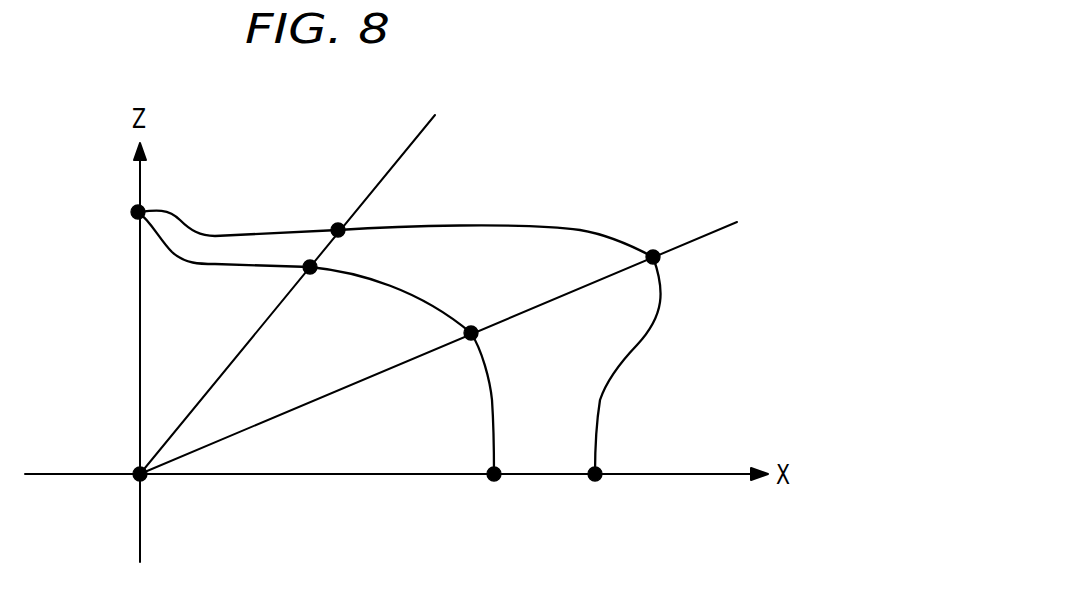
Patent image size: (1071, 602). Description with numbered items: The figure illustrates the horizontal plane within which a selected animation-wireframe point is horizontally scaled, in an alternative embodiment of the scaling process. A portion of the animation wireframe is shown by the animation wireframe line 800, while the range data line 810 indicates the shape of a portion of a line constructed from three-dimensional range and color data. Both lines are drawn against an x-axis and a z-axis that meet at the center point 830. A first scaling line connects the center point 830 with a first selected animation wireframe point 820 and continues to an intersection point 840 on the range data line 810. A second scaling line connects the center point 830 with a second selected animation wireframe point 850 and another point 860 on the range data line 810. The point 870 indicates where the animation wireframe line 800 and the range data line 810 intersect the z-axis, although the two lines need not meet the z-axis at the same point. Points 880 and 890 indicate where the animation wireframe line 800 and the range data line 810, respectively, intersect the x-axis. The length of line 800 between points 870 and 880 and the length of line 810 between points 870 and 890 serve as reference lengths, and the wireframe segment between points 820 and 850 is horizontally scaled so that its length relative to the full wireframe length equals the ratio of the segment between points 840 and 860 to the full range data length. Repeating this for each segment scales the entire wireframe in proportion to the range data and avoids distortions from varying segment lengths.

The animation wireframe line 800 is at (490, 395).
The 3D range data line 810 is at (637, 345).
The first selected animation wireframe point 820 is at (310, 267).
The center point 830 is at (140, 474).
The intersection point on the 3D range data 840 is at (338, 230).
The second selected animation wireframe point 850 is at (471, 333).
The point on the 3D range data line 860 is at (653, 257).
The z-axis intersection point 870 is at (138, 212).
The x-axis intersection point of animation wireframe line 880 is at (493, 481).
The x-axis intersection point of 3D range data line 890 is at (594, 481).